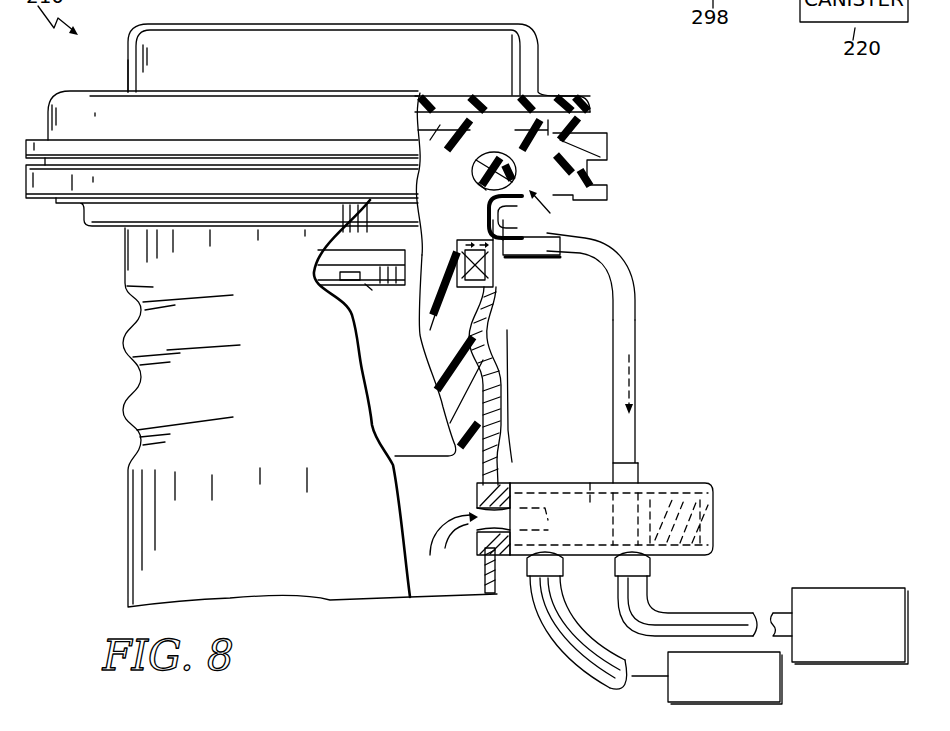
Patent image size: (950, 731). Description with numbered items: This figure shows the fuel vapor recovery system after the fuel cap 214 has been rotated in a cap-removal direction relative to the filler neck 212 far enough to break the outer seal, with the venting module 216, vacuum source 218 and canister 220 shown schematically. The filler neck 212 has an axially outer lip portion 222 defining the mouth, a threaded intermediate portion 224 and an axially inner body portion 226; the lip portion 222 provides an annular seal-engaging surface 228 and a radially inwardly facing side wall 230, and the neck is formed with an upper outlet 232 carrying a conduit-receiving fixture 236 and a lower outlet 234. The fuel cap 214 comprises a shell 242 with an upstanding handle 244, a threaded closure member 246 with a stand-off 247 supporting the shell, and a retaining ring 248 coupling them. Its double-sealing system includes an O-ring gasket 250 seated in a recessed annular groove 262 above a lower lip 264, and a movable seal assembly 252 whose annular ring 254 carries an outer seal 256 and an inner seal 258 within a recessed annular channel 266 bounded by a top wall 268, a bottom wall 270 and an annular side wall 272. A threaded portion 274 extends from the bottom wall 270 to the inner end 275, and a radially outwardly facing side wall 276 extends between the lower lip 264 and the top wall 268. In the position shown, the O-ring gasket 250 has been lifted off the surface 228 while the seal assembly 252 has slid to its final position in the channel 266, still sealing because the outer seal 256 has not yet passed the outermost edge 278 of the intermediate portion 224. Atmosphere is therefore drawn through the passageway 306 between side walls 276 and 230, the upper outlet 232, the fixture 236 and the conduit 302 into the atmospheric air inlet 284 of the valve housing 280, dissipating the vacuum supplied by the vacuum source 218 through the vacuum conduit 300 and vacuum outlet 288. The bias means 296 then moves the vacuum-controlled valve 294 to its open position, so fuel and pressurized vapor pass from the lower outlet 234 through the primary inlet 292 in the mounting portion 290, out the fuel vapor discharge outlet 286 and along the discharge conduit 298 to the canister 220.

The filler neck 212 is at (147, 510).
The fuel cap 214 is at (72, 90).
The venting module 216 is at (688, 470).
The vacuum source 218 is at (870, 596).
The canister 220 is at (782, 678).
The axially outer lip portion 222 is at (582, 222).
The intermediate portion 224 is at (502, 393).
The axially inner body portion 226 is at (492, 597).
The annular seal-engaging surface 228 is at (515, 180).
The side wall 230 is at (489, 212).
The upper outlet 232 is at (500, 238).
The lower outlet 234 is at (452, 495).
The conduit-receiving fixture 236 is at (505, 260).
The shell 242 is at (116, 102).
The upstanding handle 244 is at (370, 26).
The threaded closure member 246 is at (427, 133).
The stand-off 247 is at (487, 108).
The retaining ring 248 is at (607, 185).
The O-ring gasket 250 is at (463, 118).
The movable seal assembly 252 is at (443, 300).
The annular ring 254 is at (368, 283).
The outer seal 256 is at (340, 276).
The inner seal 258 is at (420, 293).
The recessed annular groove 262 is at (488, 155).
The lower lip 264 is at (500, 160).
The recessed annular channel 266 is at (480, 278).
The top wall 268 is at (457, 250).
The bottom wall 270 is at (333, 282).
The annular side wall 272 is at (387, 265).
The threaded portion 274 is at (501, 405).
The inner end 275 is at (383, 437).
The radially outwardly facing side wall 276 is at (478, 183).
The outermost edge 278 is at (505, 270).
The valve housing 280 is at (535, 482).
The atmospheric air inlet 284 is at (634, 472).
The fuel vapor discharge outlet 286 is at (567, 558).
The vacuum outlet 288 is at (655, 560).
The mounting portion 290 is at (483, 550).
The primary inlet 292 is at (500, 548).
The vacuum-controlled valve 294 is at (590, 481).
The bias means 296 is at (716, 522).
The discharge conduit 298 is at (590, 666).
The vacuum conduit 300 is at (652, 585).
The conduit 302 is at (628, 322).
The passageway 306 is at (480, 218).